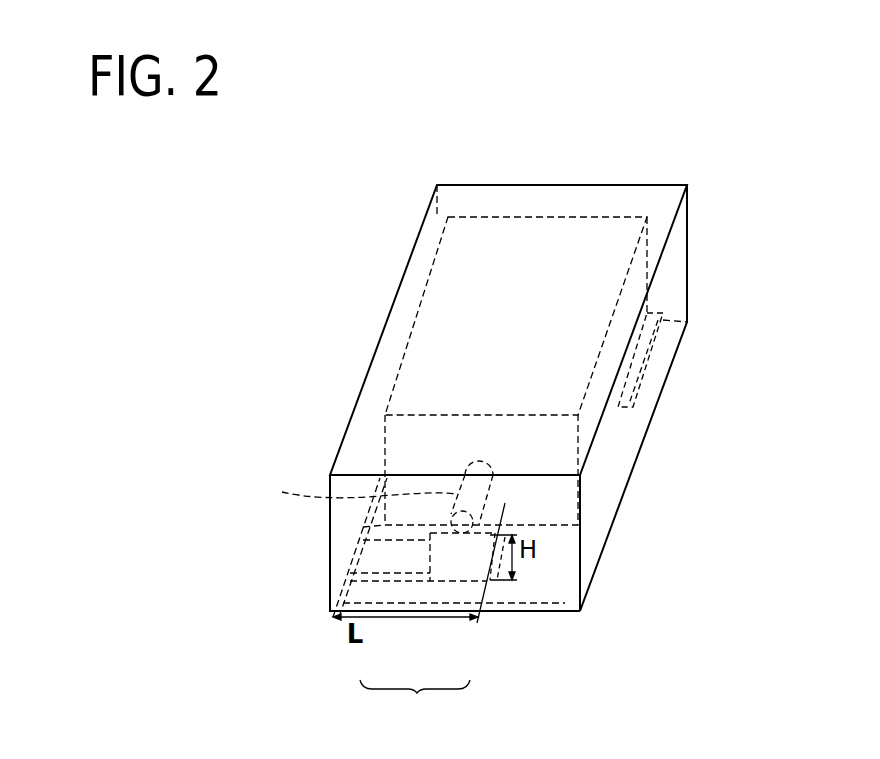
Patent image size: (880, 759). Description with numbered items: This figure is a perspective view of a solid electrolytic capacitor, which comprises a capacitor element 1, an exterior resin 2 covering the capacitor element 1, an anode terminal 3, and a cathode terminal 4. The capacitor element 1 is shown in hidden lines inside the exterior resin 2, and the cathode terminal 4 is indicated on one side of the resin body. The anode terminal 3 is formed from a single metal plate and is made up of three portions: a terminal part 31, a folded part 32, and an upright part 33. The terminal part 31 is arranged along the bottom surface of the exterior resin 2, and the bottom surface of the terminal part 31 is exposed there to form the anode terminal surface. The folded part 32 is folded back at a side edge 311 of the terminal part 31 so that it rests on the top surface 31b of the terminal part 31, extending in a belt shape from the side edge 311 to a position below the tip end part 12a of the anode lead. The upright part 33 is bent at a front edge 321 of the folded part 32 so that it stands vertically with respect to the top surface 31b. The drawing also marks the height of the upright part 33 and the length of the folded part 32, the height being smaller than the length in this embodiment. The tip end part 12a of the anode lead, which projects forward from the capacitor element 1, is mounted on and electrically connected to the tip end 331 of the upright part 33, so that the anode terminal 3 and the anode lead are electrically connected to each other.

The capacitor element 1 is at (542, 236).
The exterior resin 2 is at (655, 203).
The anode terminal 3 is at (415, 701).
The cathode terminal 4 is at (651, 360).
The tip end part 12a is at (347, 493).
The terminal part 31 is at (431, 565).
The top surface 31b is at (523, 598).
The folded part 32 is at (400, 560).
The upright part 33 is at (476, 565).
The side edge 311 is at (363, 527).
The front edge 321 is at (497, 619).
The tip end 331 is at (485, 528).